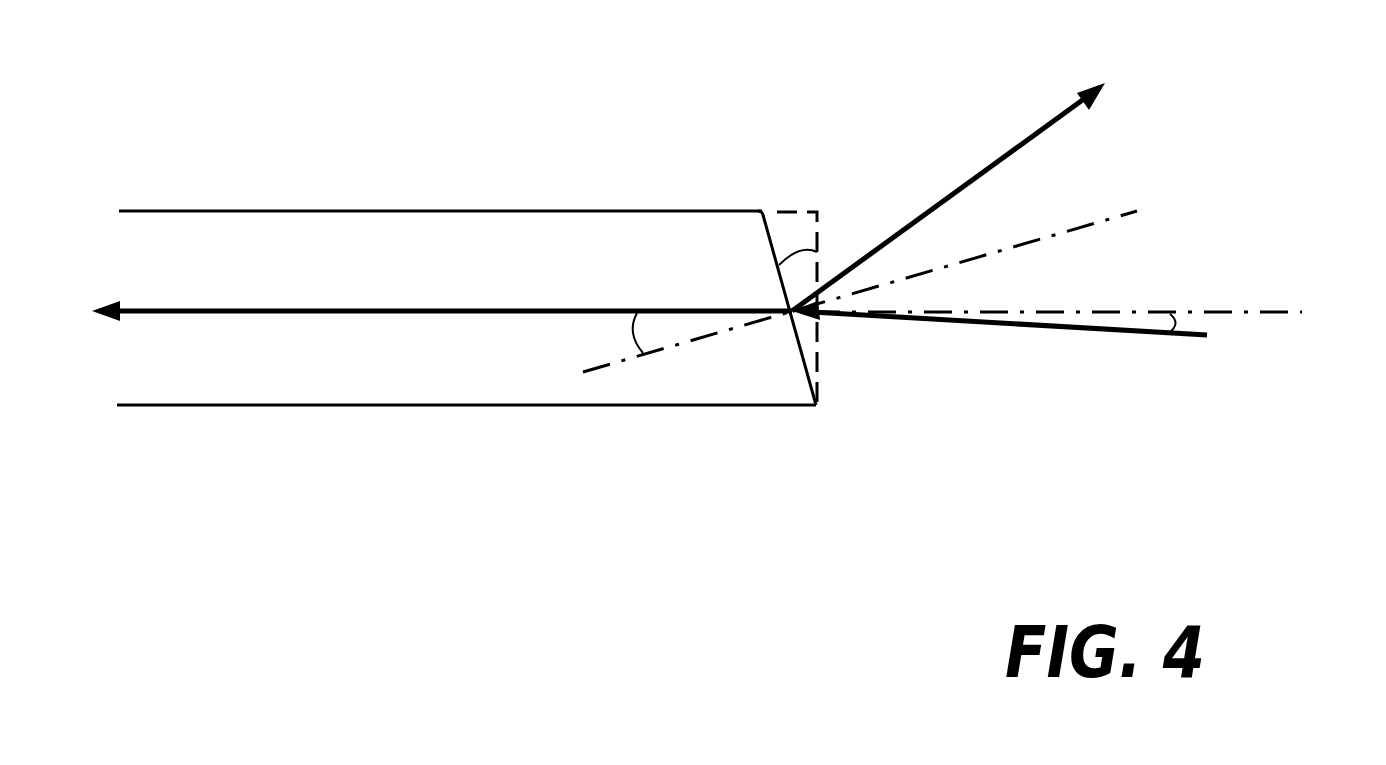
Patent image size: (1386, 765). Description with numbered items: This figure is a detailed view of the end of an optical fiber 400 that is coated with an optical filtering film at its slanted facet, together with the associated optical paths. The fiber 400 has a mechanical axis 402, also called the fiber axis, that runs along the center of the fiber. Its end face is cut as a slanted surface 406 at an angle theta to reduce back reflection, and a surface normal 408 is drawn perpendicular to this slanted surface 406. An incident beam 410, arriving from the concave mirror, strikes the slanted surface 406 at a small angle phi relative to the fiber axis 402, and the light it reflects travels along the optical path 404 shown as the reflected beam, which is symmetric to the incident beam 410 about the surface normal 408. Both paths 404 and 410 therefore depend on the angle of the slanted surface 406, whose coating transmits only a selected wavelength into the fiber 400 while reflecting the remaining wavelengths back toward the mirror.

The fiber 400 is at (237, 223).
The mechanical axis 402 is at (731, 300).
The optical path 404 is at (1077, 173).
The slanted surface 406 is at (762, 231).
The surface normal 408 is at (972, 270).
The incident beam 410 is at (1070, 349).